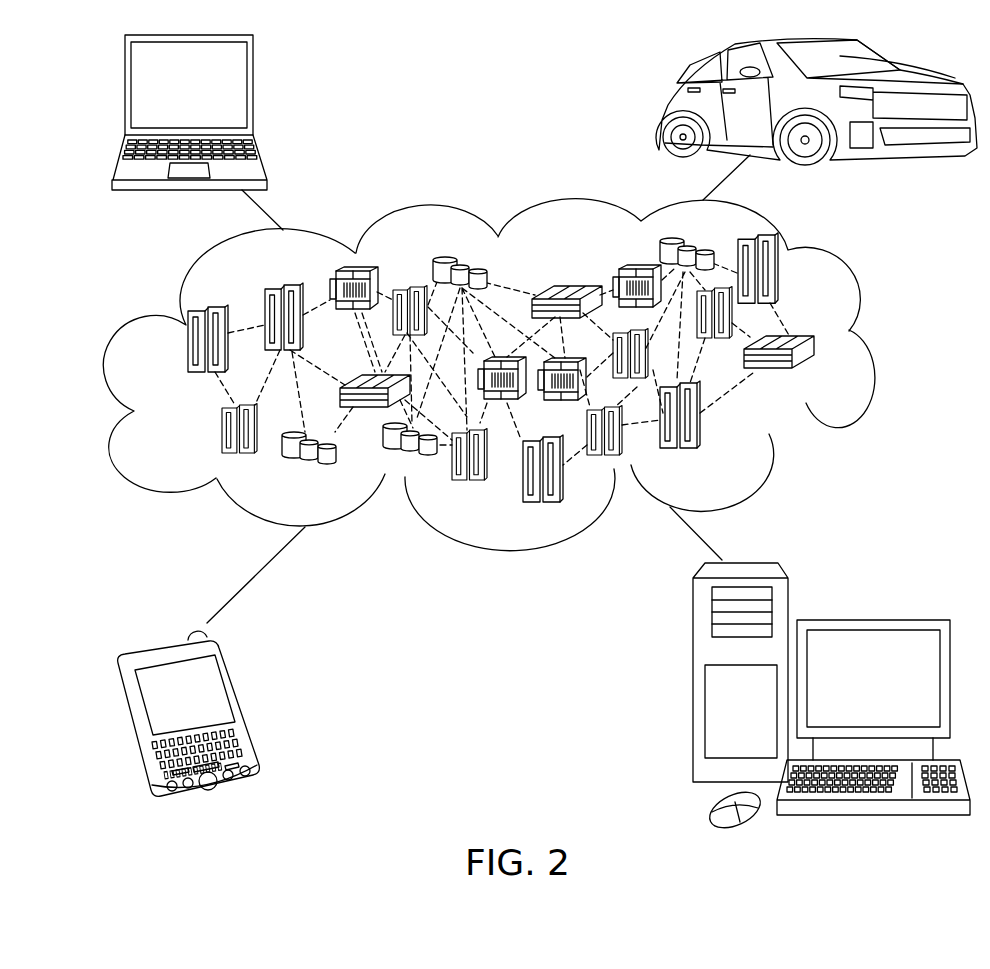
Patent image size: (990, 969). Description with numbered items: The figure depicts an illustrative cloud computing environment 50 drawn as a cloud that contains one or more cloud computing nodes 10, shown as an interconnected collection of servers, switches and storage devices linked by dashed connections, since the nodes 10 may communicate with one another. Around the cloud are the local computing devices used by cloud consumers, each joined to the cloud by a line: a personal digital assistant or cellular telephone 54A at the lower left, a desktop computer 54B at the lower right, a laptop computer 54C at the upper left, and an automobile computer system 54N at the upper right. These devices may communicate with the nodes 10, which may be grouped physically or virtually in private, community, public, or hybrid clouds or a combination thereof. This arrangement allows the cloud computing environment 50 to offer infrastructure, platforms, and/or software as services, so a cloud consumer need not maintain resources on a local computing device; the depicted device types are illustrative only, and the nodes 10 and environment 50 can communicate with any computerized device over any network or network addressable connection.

The cloud computing nodes 10 is at (817, 378).
The cloud computing environment 50 is at (869, 350).
The personal digital assistant or cellular telephone 54A is at (247, 709).
The desktop computer 54B is at (872, 620).
The laptop computer 54C is at (253, 93).
The automobile computer system 54N is at (664, 106).